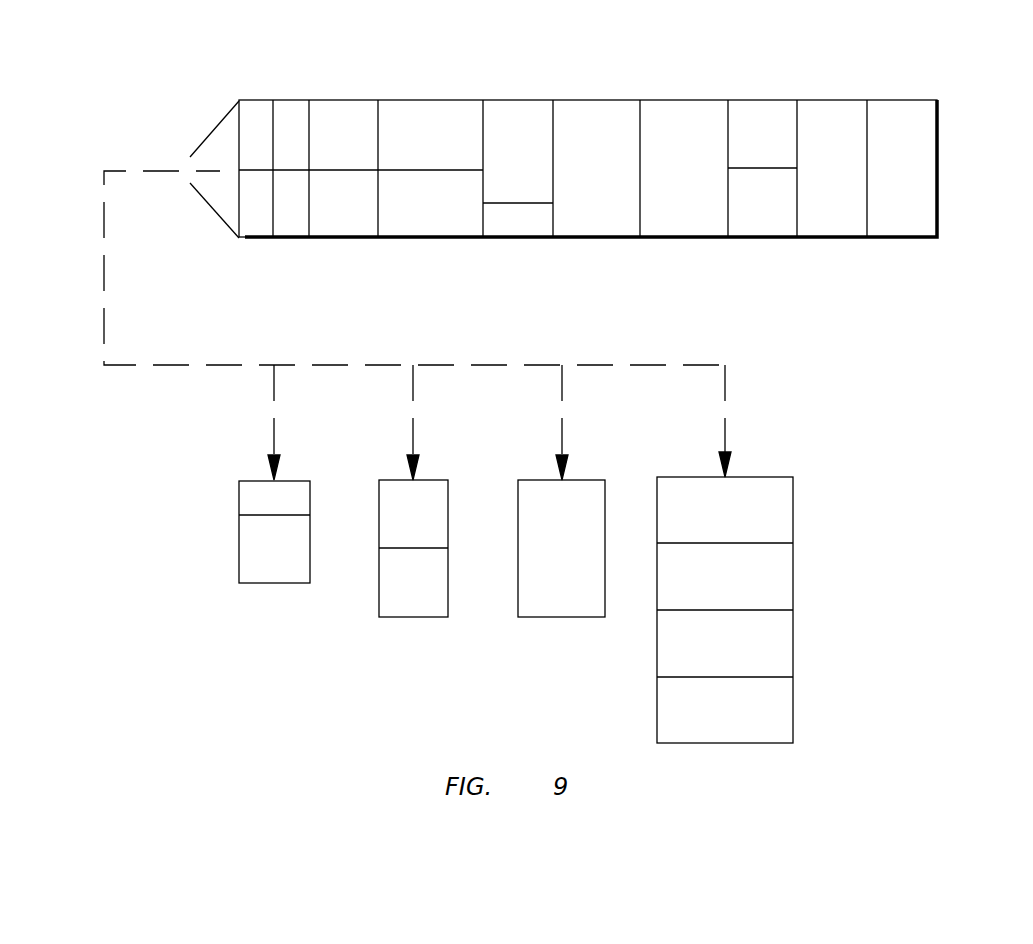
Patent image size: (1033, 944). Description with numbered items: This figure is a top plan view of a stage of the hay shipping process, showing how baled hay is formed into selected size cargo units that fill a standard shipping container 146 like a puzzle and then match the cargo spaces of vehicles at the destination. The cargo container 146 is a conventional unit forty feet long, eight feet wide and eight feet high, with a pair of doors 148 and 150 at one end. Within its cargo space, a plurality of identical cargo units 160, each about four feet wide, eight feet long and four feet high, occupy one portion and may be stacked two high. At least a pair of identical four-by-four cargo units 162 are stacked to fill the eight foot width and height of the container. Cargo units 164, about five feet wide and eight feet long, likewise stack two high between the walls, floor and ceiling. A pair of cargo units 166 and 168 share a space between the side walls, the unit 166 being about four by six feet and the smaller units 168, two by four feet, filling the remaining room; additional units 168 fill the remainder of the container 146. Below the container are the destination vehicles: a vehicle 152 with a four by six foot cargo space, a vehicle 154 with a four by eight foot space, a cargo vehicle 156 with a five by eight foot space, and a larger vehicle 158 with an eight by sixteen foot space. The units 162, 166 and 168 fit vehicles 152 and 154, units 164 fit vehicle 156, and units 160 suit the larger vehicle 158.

The cargo container 146 is at (598, 100).
The door 148 is at (215, 122).
The door 150 is at (215, 222).
The vehicle 152 is at (276, 584).
The vehicle 154 is at (415, 618).
The cargo vehicle 156 is at (563, 618).
The vehicle 158 is at (731, 744).
The cargo unit 160 is at (832, 108).
The cargo unit 162 is at (343, 110).
The cargo unit 164 is at (597, 227).
The cargo unit 166 is at (422, 110).
The cargo unit 168 is at (245, 110).